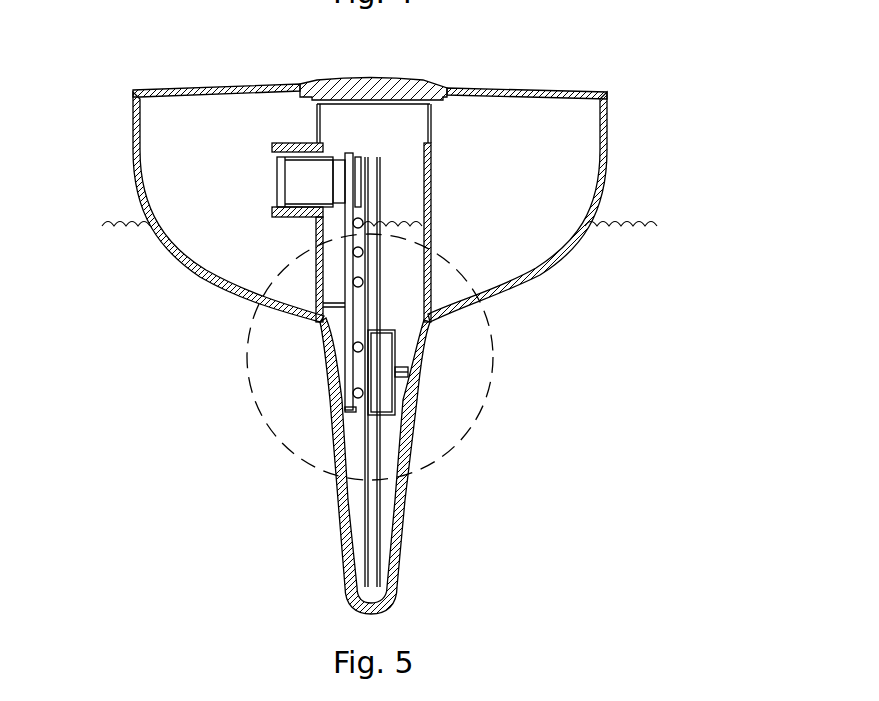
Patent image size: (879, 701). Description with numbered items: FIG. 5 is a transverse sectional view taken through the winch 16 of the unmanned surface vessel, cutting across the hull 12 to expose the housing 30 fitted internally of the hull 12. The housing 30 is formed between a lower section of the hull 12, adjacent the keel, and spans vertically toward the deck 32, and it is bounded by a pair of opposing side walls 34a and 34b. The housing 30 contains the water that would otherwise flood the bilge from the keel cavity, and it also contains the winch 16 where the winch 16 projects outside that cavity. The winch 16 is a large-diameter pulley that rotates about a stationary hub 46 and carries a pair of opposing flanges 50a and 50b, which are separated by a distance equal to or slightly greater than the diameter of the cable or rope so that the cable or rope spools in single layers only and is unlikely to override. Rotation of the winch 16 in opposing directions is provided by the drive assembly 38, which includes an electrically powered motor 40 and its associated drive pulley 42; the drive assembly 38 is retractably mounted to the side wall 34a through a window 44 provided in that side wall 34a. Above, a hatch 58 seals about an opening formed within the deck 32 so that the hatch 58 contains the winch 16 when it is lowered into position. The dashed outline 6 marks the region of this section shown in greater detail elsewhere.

The detail region 6 is at (478, 440).
The hull 12 is at (522, 283).
The winch 16 is at (358, 496).
The housing 30 is at (457, 209).
The deck 32 is at (515, 88).
The side wall 34a is at (288, 187).
The side wall 34b is at (425, 175).
The drive assembly 38 is at (240, 188).
The electrically powered motor 40 is at (302, 237).
The drive pulley 42 is at (372, 172).
The window 44 is at (310, 164).
The stationary hub 46 is at (387, 373).
The flange 50a is at (367, 515).
The flange 50b is at (381, 527).
The hatch 58 is at (342, 88).